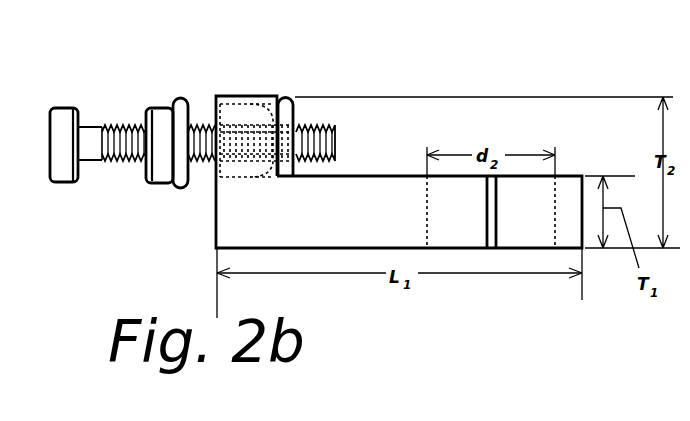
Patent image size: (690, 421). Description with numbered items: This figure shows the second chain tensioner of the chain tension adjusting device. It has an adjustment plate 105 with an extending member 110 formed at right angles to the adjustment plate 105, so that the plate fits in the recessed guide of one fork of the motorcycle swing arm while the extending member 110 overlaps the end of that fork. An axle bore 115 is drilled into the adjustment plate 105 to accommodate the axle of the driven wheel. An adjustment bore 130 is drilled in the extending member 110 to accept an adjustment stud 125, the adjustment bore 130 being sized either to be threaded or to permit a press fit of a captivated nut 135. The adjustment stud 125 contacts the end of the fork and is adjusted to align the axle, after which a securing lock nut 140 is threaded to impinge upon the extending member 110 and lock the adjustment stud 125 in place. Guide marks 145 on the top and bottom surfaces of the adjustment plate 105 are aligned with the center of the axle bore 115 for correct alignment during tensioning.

The adjustment plate 105 is at (216, 246).
The extending member 110 is at (220, 95).
The axle bore 115 is at (557, 205).
The adjustment stud 125 is at (95, 118).
The adjustment bore 130 is at (251, 102).
The captivated nut 135 is at (288, 96).
The securing lock nut 140 is at (157, 109).
The guide marks 145 is at (483, 217).